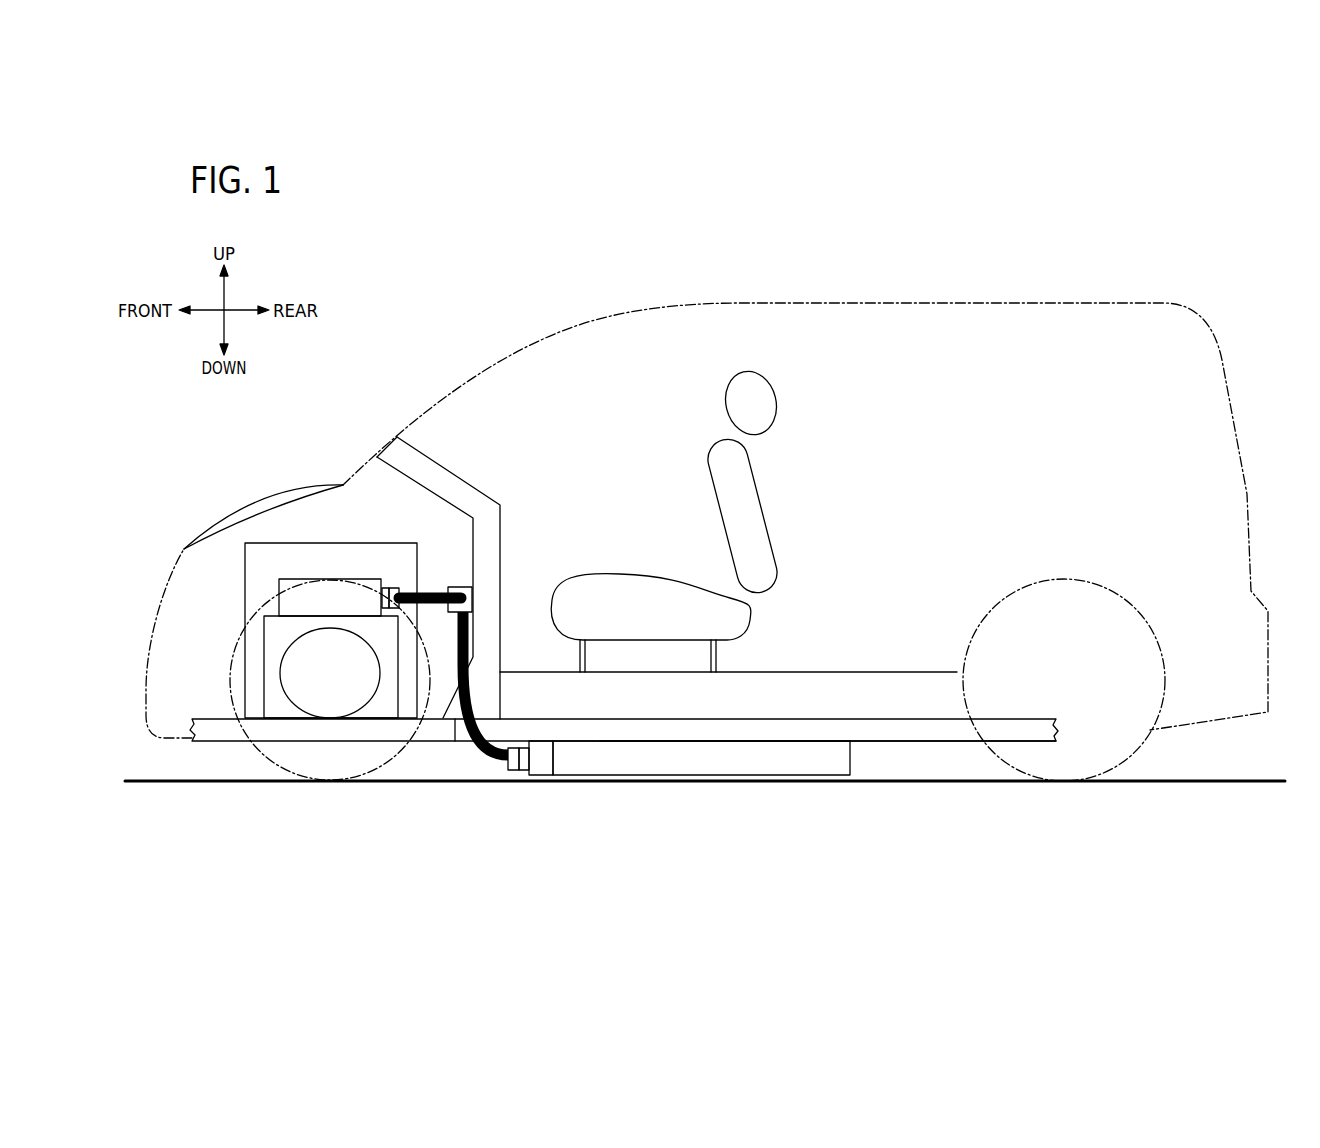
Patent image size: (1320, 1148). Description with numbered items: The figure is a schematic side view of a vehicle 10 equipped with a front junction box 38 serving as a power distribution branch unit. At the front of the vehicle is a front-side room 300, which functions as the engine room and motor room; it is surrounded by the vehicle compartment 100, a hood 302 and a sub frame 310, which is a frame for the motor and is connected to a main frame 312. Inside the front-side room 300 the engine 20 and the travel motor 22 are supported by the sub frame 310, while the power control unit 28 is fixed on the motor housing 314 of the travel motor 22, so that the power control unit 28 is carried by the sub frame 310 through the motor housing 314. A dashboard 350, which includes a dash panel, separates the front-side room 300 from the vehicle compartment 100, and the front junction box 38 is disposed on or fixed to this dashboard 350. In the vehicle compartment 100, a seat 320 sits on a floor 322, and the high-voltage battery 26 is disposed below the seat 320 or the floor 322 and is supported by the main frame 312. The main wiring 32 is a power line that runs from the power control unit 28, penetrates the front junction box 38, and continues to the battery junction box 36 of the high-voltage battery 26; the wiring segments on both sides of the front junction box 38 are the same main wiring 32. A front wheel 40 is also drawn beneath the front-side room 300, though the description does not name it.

The vehicle 10 is at (419, 245).
The vehicle compartment 100 is at (627, 358).
The engine 20 is at (375, 542).
The travel motor 22 is at (313, 710).
The high-voltage battery 26 is at (810, 767).
The power control unit 28 is at (278, 588).
The main wiring 32 is at (437, 590).
The battery junction box 36 is at (540, 768).
The front junction box 38 is at (462, 585).
The front wheel 40 is at (263, 759).
The front-side room 300 is at (283, 527).
The hood 302 is at (291, 497).
The sub frame 310 is at (208, 717).
The main frame 312 is at (957, 742).
The motor housing 314 is at (278, 640).
The seat 320 is at (774, 450).
The floor 322 is at (878, 671).
The dashboard 350 is at (478, 484).